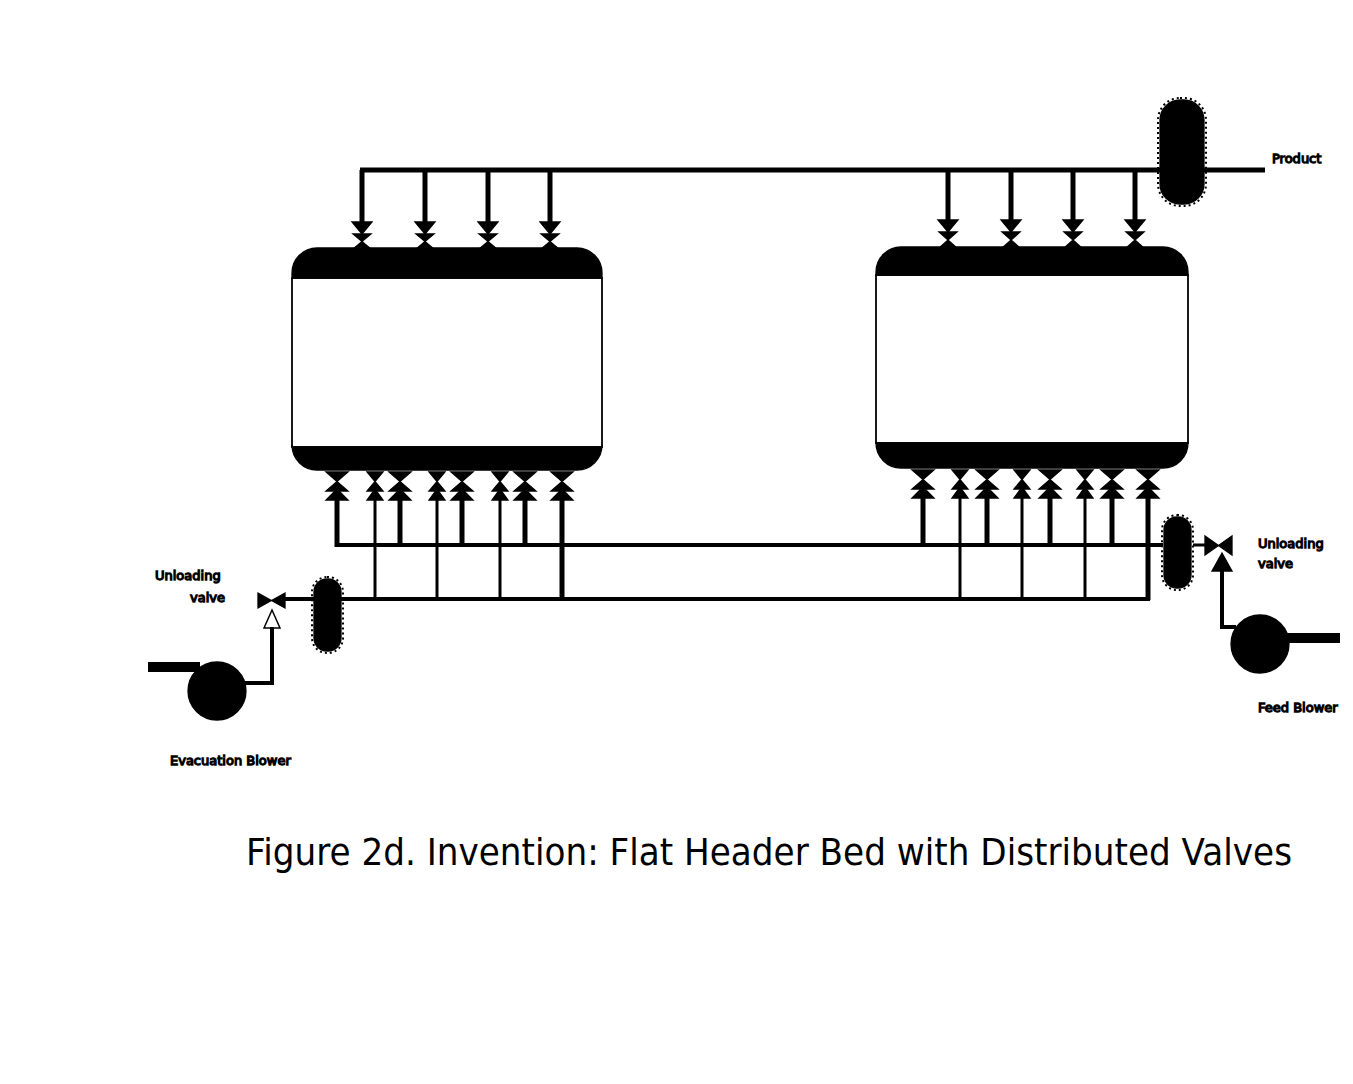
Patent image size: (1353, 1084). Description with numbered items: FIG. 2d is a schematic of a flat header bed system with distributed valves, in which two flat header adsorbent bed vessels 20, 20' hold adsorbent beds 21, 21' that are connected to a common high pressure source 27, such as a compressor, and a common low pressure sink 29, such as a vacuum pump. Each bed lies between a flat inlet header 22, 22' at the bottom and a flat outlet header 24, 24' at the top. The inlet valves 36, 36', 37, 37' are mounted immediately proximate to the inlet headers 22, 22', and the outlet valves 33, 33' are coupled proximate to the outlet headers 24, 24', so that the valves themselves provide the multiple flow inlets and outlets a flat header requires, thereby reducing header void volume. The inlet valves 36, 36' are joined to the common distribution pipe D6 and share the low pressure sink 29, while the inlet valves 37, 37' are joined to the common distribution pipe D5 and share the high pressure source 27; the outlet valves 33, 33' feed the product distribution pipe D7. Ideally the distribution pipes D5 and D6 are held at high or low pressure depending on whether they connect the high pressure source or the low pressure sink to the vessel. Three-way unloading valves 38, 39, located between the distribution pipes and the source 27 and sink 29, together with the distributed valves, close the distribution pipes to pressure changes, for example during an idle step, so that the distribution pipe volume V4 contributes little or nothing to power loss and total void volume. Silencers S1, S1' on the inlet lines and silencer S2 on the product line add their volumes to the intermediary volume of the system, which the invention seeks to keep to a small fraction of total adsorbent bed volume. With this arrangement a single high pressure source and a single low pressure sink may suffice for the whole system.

The flat header adsorbent bed vessel 20 is at (1037, 351).
The flat header adsorbent bed vessel 20' is at (453, 350).
The flat header adsorbent bed 21 is at (1068, 359).
The flat header adsorbent bed 21' is at (487, 362).
The inlet header 22 is at (1003, 466).
The inlet header 22' is at (413, 467).
The outlet header 24 is at (1005, 243).
The outlet header 24' is at (415, 245).
The high pressure source 27 is at (1232, 662).
The low pressure sink 29 is at (237, 712).
The outlet valves 33 is at (1091, 209).
The outlet valves 33' is at (485, 209).
The inlet valves 36 is at (1079, 535).
The inlet valves 36' is at (500, 536).
The inlet valves 37 is at (1053, 508).
The inlet valves 37' is at (469, 509).
The three-way unloading valve 38 is at (1222, 537).
The three-way unloading valve 39 is at (260, 595).
The distribution pipe D5 is at (868, 540).
The distribution pipe D6 is at (667, 600).
The distribution pipe D7 is at (752, 168).
The silencer S1 is at (358, 631).
The silencer S1' is at (1140, 575).
The silencer S2 is at (1182, 100).
The distribution pipe volume V4 is at (759, 552).